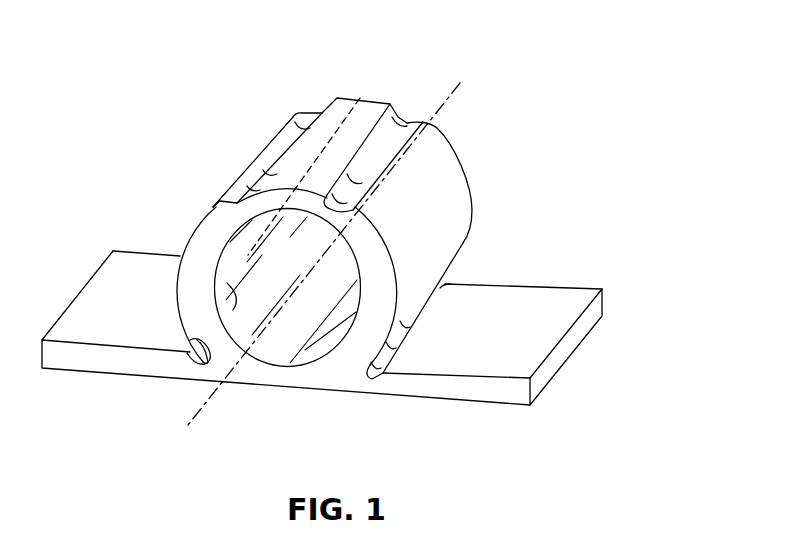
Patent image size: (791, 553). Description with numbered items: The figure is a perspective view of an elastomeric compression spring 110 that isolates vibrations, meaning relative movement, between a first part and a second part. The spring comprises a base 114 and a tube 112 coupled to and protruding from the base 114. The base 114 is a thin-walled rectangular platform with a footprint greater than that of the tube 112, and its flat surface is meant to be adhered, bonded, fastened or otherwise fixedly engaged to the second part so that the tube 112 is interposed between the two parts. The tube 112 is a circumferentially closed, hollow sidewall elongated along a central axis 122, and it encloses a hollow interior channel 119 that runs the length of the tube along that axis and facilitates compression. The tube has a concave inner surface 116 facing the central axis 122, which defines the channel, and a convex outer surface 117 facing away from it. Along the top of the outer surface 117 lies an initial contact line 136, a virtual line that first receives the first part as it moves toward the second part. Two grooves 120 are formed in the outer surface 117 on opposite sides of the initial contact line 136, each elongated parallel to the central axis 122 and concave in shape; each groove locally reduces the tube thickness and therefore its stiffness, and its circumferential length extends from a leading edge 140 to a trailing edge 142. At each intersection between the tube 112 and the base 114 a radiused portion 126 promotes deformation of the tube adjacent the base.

The elastomeric compression spring 110 is at (452, 141).
The tube 112 is at (364, 95).
The base 114 is at (577, 285).
The inner surface 116 is at (253, 298).
The outer surface 117 is at (407, 262).
The hollow interior channel 119 is at (280, 330).
The groove 120 is at (290, 123).
The central axis 122 is at (452, 98).
The radiused portion 126 is at (440, 287).
The initial contact line 136 is at (337, 132).
The leading edge 140 is at (273, 160).
The trailing edge 142 is at (238, 193).